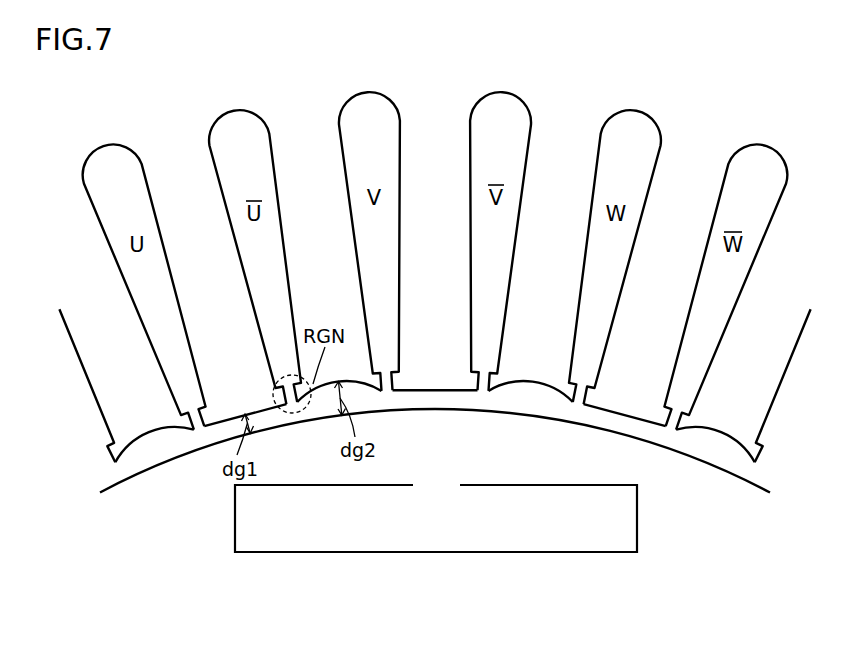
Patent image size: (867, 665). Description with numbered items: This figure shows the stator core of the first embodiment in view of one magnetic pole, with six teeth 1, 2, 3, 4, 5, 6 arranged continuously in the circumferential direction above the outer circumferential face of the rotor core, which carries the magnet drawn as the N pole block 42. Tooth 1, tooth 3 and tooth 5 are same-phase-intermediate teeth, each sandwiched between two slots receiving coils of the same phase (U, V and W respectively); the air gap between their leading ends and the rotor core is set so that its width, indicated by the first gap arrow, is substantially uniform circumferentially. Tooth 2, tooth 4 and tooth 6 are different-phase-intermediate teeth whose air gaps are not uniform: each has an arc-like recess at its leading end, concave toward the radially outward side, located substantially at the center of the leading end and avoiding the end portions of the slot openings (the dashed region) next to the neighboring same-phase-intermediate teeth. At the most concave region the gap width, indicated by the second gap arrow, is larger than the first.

The same-phase-intermediate tooth 1 is at (180, 167).
The different-phase-intermediate tooth 2 is at (302, 150).
The same-phase-intermediate tooth 3 is at (433, 137).
The different-phase-intermediate tooth 4 is at (563, 145).
The same-phase-intermediate tooth 5 is at (693, 170).
The different-phase-intermediate tooth 6 is at (803, 233).
The permanent magnet (42A) of rotor, N pole 42 is at (565, 553).